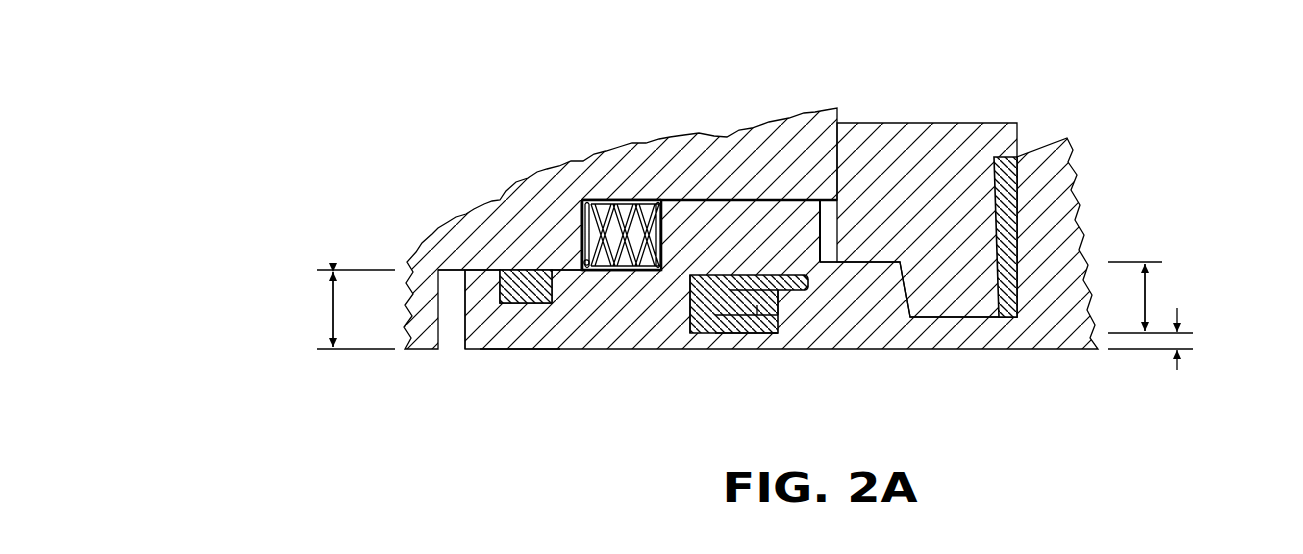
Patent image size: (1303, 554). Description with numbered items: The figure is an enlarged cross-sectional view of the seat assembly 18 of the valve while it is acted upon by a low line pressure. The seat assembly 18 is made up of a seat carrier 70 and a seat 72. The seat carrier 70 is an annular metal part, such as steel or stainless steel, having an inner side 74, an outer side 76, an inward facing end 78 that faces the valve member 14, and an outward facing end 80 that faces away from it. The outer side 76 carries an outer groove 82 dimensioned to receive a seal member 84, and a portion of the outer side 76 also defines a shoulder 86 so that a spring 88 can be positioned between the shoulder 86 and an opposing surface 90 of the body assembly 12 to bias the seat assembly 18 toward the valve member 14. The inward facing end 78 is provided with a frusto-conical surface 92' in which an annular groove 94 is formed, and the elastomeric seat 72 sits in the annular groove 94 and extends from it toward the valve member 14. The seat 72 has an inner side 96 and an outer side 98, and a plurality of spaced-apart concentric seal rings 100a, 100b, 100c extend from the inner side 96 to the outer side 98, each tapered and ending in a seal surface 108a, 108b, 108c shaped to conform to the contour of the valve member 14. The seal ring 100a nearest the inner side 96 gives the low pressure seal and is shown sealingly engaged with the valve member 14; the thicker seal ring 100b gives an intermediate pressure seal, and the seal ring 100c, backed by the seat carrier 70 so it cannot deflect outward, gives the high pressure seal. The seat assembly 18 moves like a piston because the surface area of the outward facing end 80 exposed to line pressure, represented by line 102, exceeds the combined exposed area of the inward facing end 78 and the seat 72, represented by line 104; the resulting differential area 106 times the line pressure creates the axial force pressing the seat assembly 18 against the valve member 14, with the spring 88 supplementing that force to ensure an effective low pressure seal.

The body assembly 12 is at (472, 215).
The valve member 14 is at (1078, 150).
The seat assembly 18 is at (565, 352).
The seat carrier 70 is at (487, 350).
The seat 72 is at (690, 297).
The inner side 74 is at (513, 350).
The outer side 76 is at (713, 200).
The inward facing end 78 is at (820, 238).
The outward facing end 80 is at (443, 345).
The outer groove 82 is at (505, 270).
The seal member 84 is at (513, 268).
The shoulder 86 is at (638, 205).
The spring 88 is at (612, 215).
The opposing surface 90 is at (598, 212).
The outer seal 92' is at (950, 204).
The annular groove 94 is at (700, 333).
The inner side 96 is at (711, 333).
The outer side 98 is at (788, 274).
The seal ring 100a is at (747, 333).
The seal ring 100b is at (757, 307).
The seal ring 100c is at (790, 288).
The line representing surface area of outward facing end 102 is at (333, 304).
The line representing surface area of inward facing end and seat 104 is at (1175, 342).
The differential area 106 is at (1148, 293).
The seal surface 108a is at (773, 333).
The seal surface 108b is at (808, 290).
The seal surface 108c is at (815, 280).